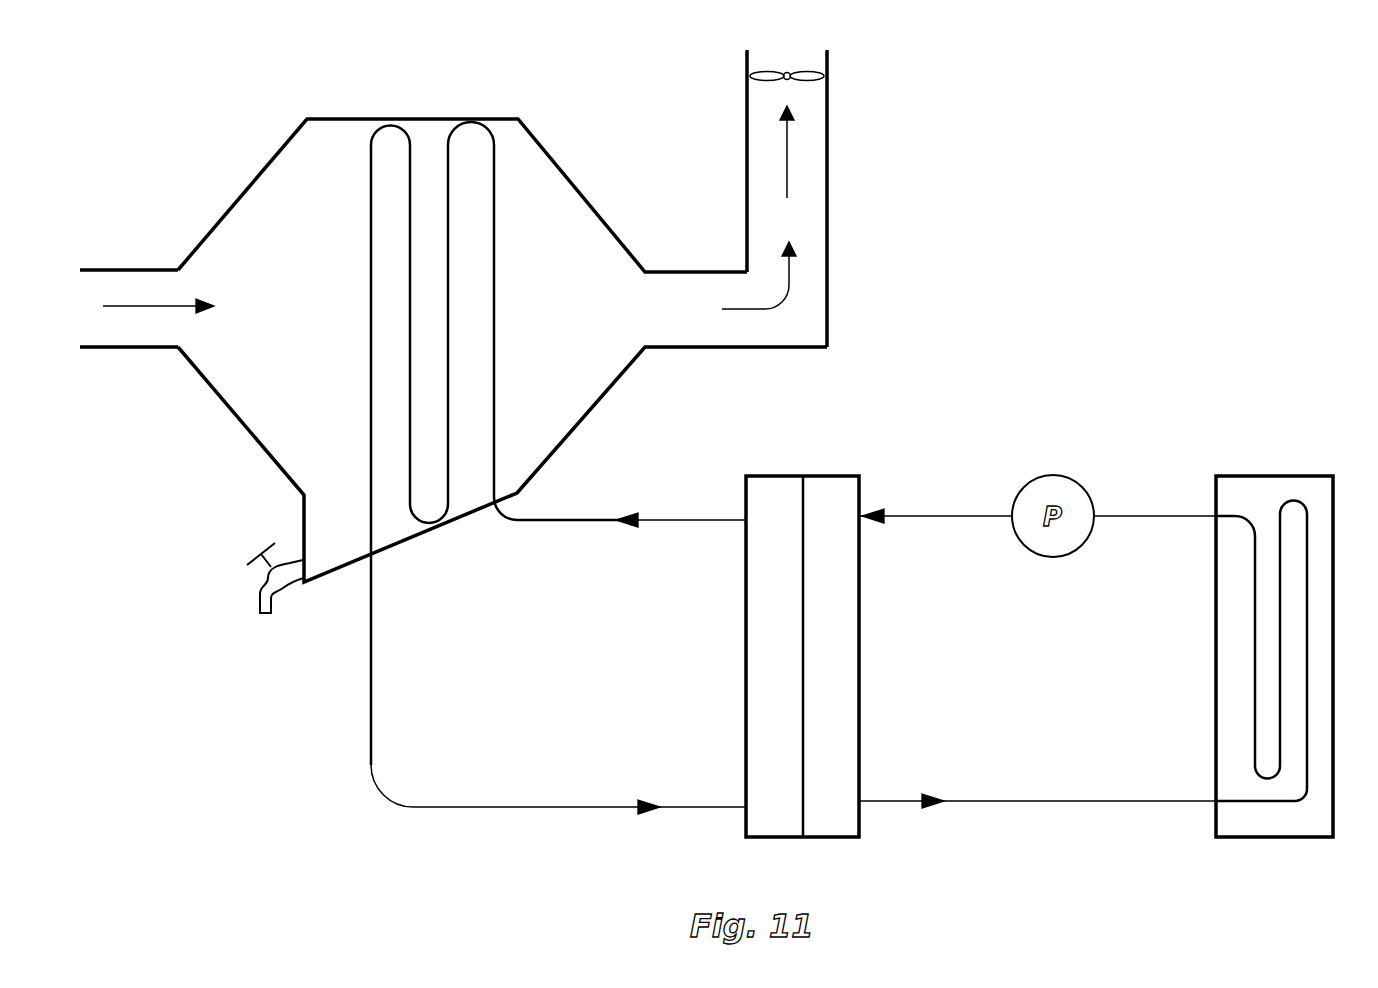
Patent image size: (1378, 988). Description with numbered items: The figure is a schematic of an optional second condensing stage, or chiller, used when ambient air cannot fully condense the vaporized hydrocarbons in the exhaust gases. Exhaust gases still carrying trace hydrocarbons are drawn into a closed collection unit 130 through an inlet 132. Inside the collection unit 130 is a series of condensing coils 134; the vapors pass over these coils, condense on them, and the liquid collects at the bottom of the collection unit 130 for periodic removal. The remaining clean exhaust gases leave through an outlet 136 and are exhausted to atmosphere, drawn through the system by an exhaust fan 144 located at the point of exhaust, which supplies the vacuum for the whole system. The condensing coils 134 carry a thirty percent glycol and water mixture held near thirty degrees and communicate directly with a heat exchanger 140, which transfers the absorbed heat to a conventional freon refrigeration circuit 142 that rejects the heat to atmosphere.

The closed collection unit 130 is at (347, 119).
The inlet 132 is at (147, 270).
The condensing coils 134 is at (495, 257).
The outlet 136 is at (742, 347).
The heat exchanger 140 is at (837, 476).
The freon refrigeration circuit 142 is at (1293, 476).
The exhaust fan 144 is at (820, 80).